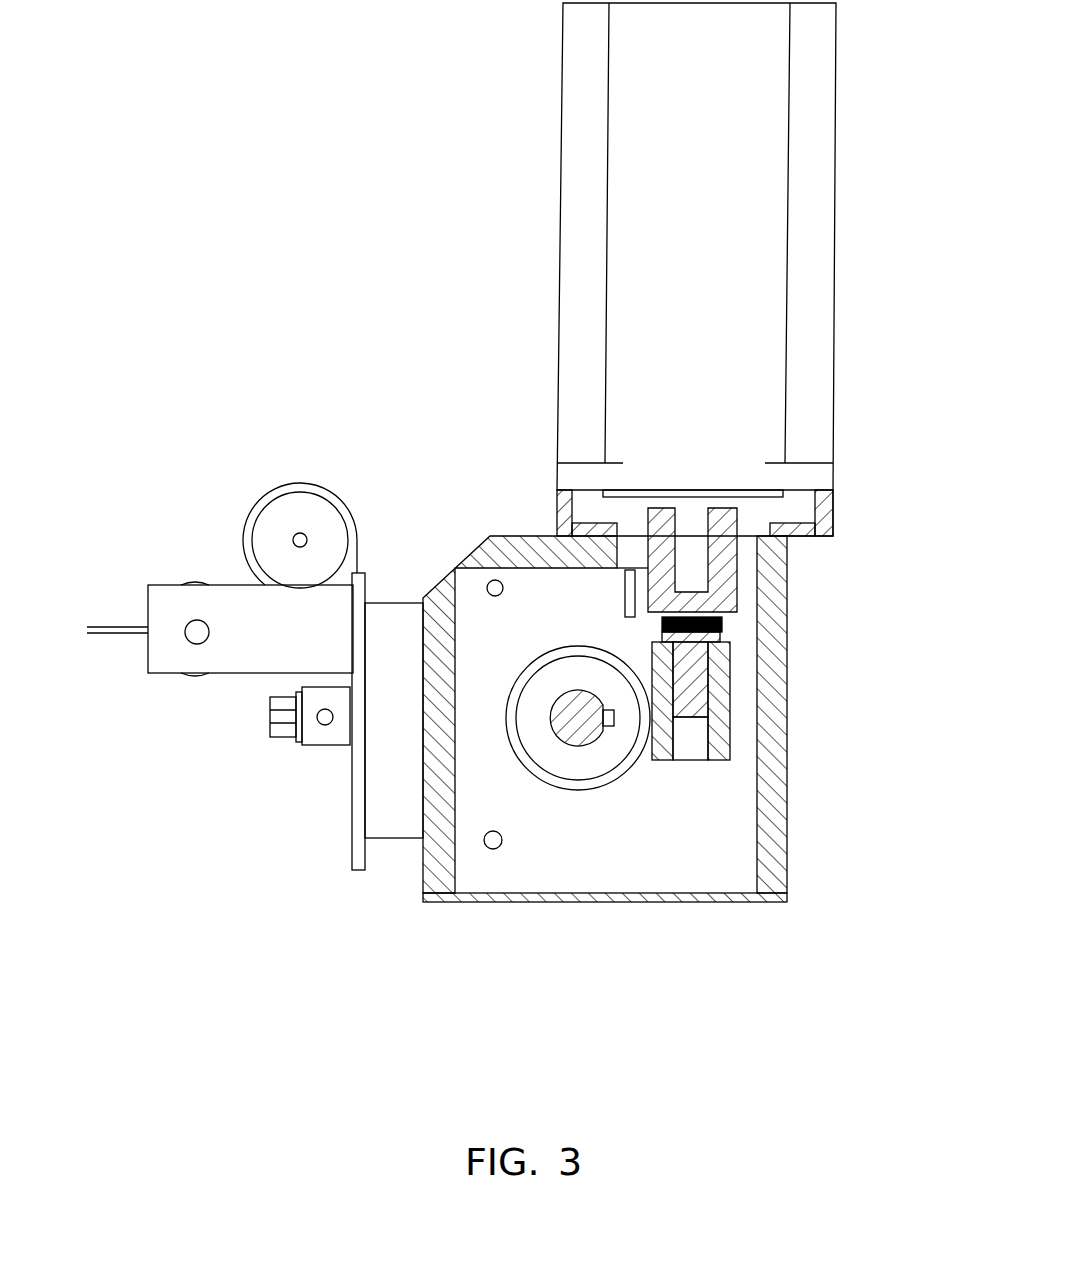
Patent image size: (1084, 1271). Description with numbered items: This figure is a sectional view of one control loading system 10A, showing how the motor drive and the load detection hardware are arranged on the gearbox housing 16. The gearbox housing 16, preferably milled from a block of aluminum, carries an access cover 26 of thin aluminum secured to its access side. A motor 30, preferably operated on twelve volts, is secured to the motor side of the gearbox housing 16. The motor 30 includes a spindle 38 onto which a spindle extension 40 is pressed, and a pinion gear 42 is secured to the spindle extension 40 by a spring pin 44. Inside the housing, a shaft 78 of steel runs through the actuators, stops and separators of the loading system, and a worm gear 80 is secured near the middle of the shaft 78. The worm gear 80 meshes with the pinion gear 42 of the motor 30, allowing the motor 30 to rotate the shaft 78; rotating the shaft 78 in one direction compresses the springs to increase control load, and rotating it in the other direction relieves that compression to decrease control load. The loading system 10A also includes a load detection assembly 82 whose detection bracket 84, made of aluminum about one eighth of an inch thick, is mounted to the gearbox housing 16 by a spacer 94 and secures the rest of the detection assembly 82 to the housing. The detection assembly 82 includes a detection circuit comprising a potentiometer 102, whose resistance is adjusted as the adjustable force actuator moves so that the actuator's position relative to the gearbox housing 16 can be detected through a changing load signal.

The loading system 10A is at (238, 98).
The motor 30 is at (558, 328).
The gearbox housing 16 is at (862, 854).
The access cover 26 is at (770, 905).
The spindle 38 is at (692, 555).
The spindle extension 40 is at (742, 597).
The pinion gear 42 is at (655, 657).
The spring pin 44 is at (697, 640).
The worm gear 80 is at (547, 647).
The shaft 78 is at (582, 738).
The spacer 94 is at (390, 832).
The detection bracket 84 is at (355, 858).
The load detection assembly 82 is at (279, 805).
The potentiometer 102 is at (308, 745).